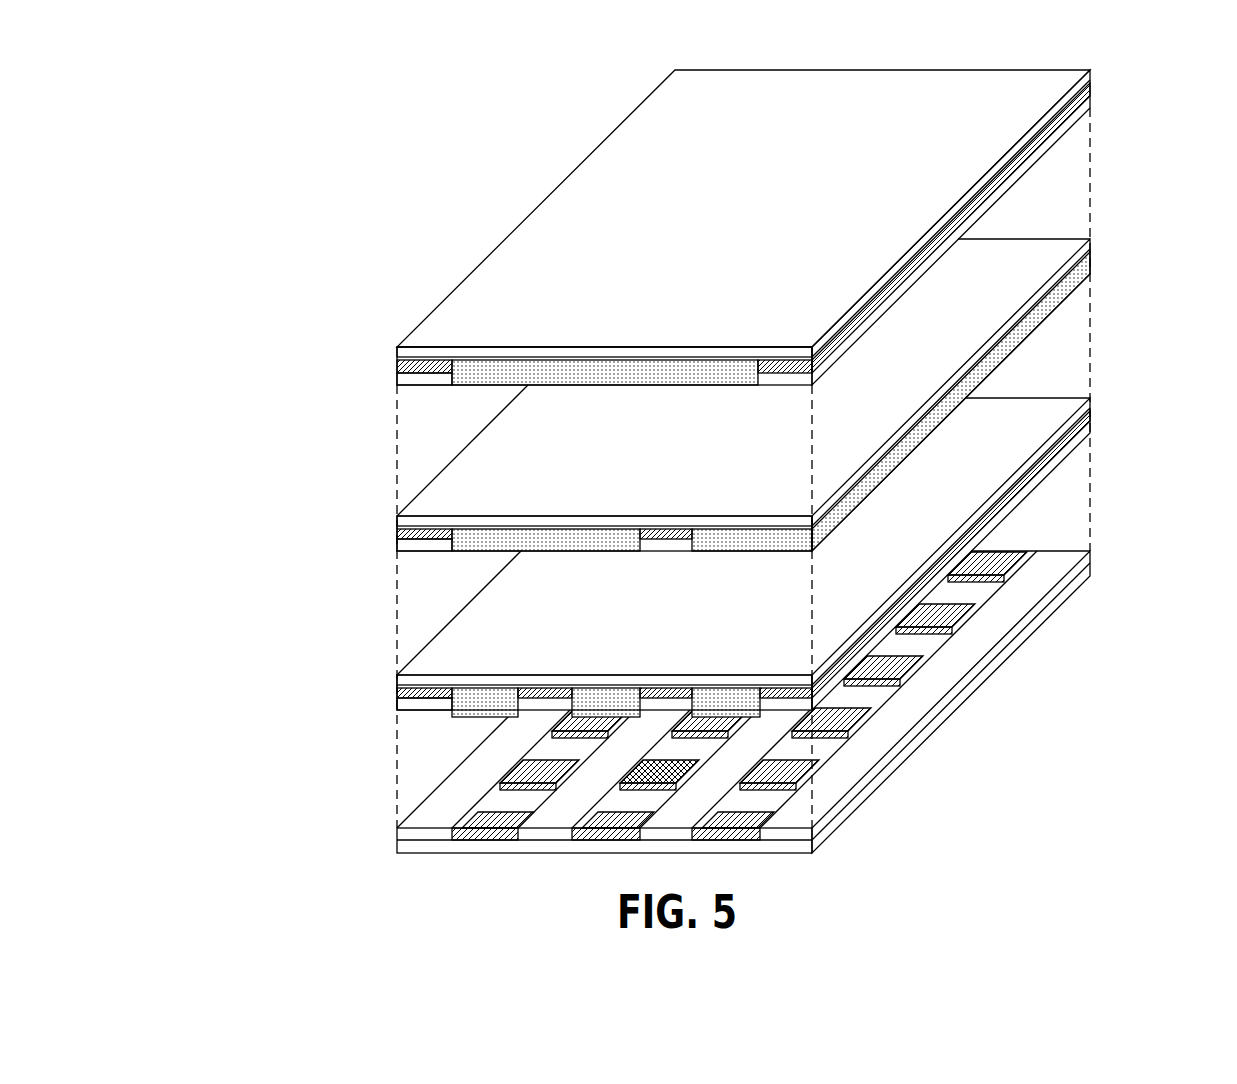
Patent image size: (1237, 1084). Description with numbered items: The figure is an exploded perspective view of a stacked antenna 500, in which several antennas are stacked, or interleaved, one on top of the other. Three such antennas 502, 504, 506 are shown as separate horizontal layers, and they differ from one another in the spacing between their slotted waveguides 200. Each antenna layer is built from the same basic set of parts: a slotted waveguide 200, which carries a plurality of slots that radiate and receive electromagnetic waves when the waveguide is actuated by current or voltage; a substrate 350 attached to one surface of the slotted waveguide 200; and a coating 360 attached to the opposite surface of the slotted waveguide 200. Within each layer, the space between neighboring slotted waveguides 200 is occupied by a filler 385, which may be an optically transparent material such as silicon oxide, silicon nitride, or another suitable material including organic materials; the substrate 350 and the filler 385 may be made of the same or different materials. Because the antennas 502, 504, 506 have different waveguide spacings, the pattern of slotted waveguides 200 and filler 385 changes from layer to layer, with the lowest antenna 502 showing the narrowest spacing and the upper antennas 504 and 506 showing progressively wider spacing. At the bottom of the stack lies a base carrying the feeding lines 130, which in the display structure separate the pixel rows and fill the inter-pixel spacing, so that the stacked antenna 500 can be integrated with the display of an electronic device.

The stacked antenna 500 is at (381, 174).
The antenna 506 is at (283, 307).
The antenna 504 is at (283, 476).
The antenna 502 is at (283, 635).
The coating 360 is at (423, 330).
The slotted waveguide 200 is at (398, 369).
The substrate 350 is at (410, 378).
The filler 385 is at (480, 383).
The feeding lines 130 is at (422, 820).